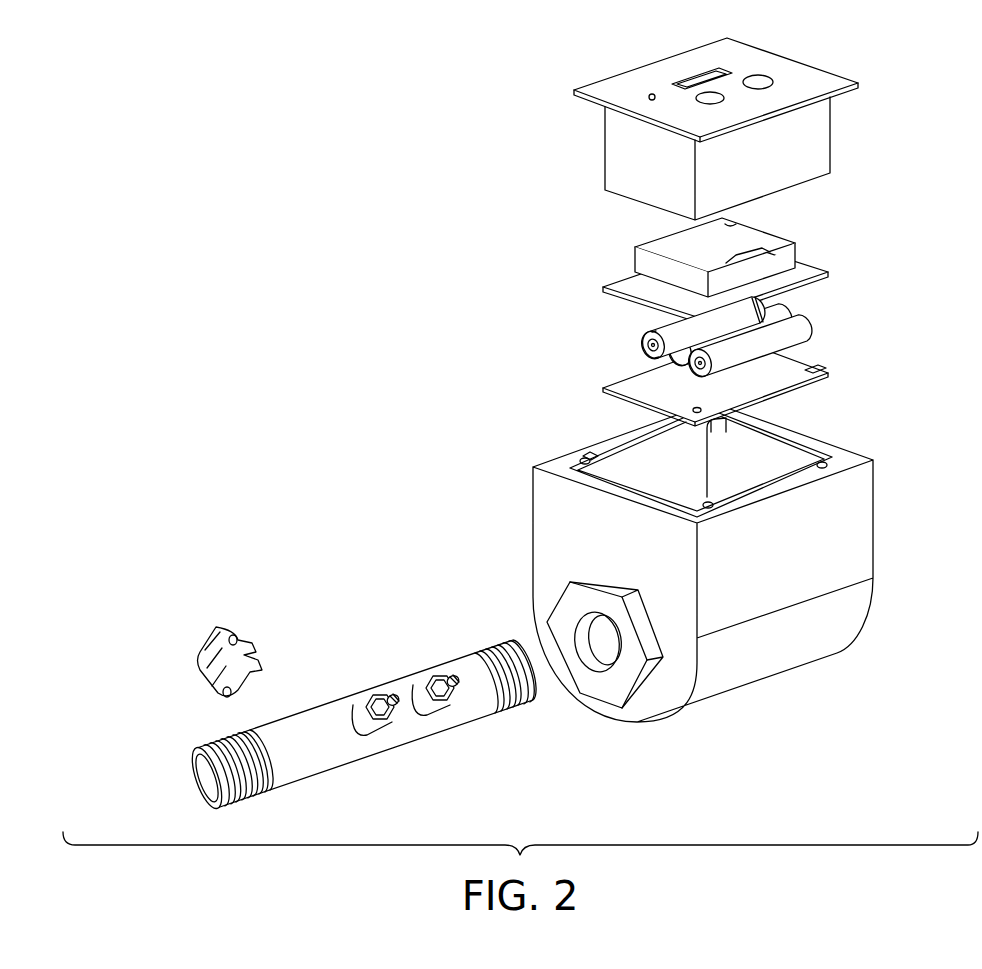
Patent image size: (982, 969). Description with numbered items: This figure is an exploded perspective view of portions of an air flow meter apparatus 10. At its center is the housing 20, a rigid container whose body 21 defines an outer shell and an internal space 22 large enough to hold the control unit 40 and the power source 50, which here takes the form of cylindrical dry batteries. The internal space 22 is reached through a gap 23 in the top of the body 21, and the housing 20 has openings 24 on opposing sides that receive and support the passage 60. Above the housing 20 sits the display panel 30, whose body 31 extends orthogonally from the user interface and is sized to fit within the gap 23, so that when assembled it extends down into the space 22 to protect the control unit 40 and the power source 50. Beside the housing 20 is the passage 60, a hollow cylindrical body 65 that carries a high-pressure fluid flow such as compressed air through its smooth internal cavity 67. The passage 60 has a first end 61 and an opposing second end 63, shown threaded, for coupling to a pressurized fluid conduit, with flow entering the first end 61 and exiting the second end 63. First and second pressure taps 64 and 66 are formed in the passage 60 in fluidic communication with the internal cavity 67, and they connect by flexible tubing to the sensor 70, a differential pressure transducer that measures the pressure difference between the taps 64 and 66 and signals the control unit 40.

The air flow meter apparatus 10 is at (258, 281).
The housing 20 is at (897, 533).
The body 21 is at (783, 592).
The internal space 22 is at (640, 483).
The gap 23 is at (808, 447).
The openings 24 is at (603, 655).
The display panel 30 is at (797, 72).
The body 31 is at (613, 157).
The control unit 40 is at (770, 243).
The power source 50 is at (770, 340).
The passage 60 is at (308, 684).
The first end 61 is at (217, 744).
The second end 63 is at (503, 648).
The first pressure tap 64 is at (378, 700).
The body 65 is at (340, 753).
The second pressure tap 66 is at (436, 680).
The internal cavity 67 is at (214, 780).
The sensor 70 is at (233, 650).